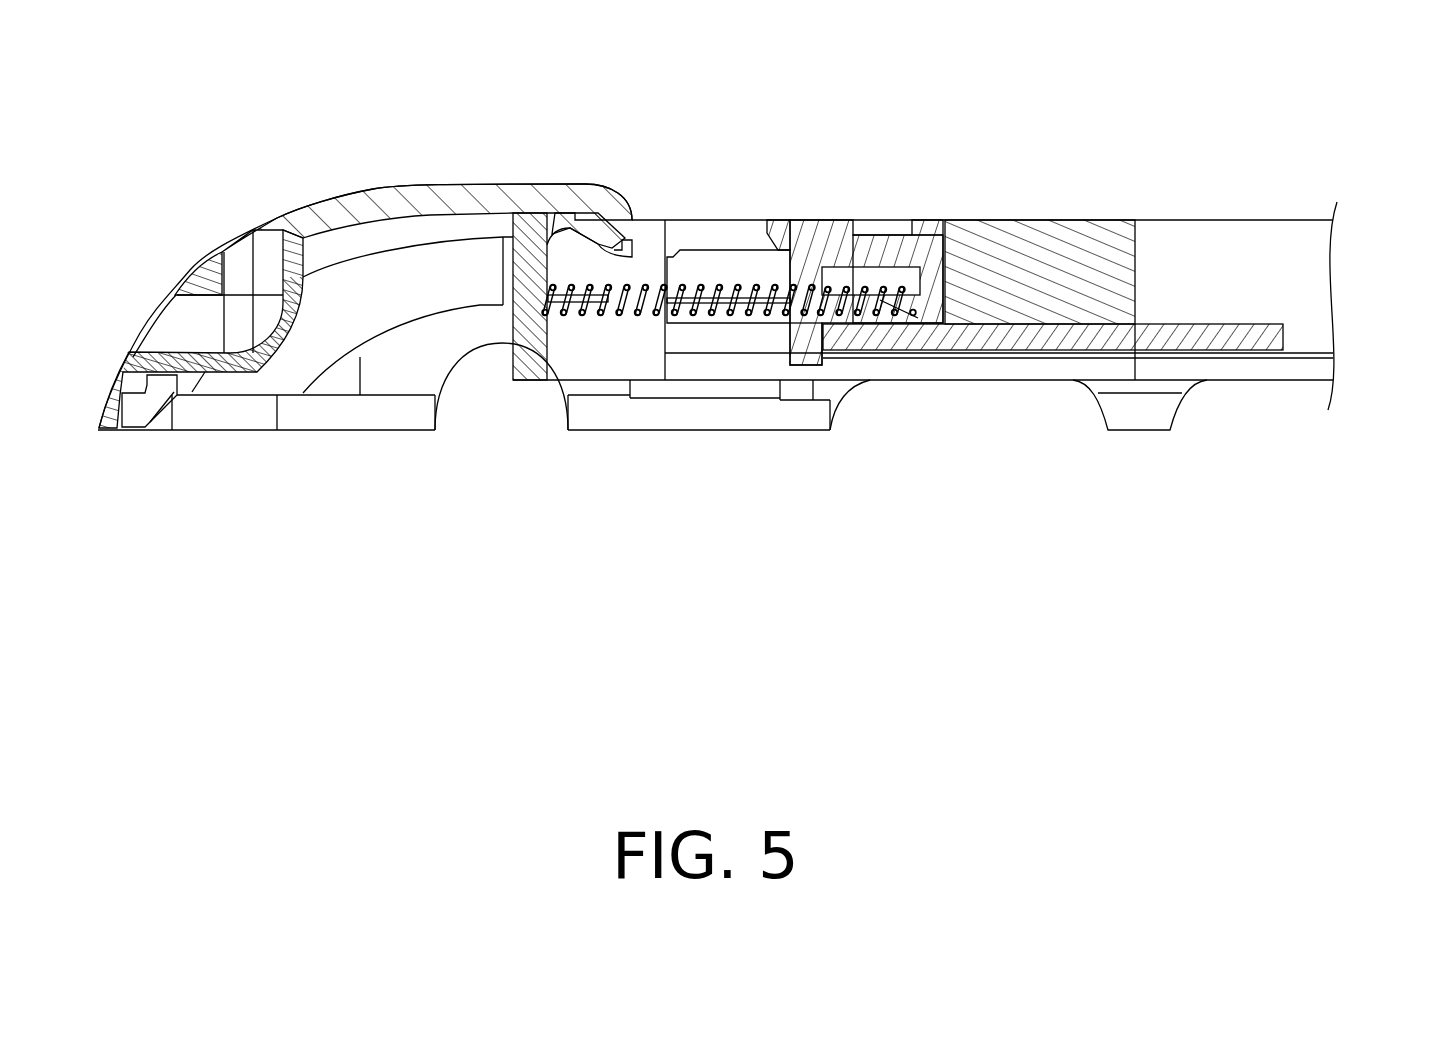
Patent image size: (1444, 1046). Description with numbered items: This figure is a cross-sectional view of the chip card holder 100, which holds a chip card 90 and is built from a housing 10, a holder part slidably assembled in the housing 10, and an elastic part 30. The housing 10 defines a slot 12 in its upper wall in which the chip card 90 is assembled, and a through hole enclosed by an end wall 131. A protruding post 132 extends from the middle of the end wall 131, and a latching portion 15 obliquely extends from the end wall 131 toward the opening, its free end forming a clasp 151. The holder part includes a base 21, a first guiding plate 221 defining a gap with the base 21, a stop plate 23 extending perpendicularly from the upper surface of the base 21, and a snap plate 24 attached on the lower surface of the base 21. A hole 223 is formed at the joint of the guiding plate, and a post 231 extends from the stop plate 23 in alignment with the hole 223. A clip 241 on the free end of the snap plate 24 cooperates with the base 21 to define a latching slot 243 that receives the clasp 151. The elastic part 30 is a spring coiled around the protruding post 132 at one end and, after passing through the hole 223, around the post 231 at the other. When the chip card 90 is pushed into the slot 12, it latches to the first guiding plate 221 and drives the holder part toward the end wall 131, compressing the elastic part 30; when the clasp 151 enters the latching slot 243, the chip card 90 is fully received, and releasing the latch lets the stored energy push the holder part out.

The chip card holder 100 is at (320, 472).
The housing 10 is at (348, 200).
The slot 12 is at (1050, 354).
The end wall 131 is at (548, 343).
The protruding post 132 is at (600, 303).
The latching portion 15 is at (575, 218).
The clasp 151 is at (628, 250).
The elastic part 30 is at (716, 283).
The snap plate 24 is at (818, 232).
The clip 241 is at (773, 250).
The latching slot 243 is at (773, 247).
The first guiding plate 221 is at (800, 343).
The base 21 is at (890, 250).
The hole 223 is at (818, 322).
The post 231 is at (890, 303).
The stop plate 23 is at (945, 280).
The chip card 90 is at (1283, 333).